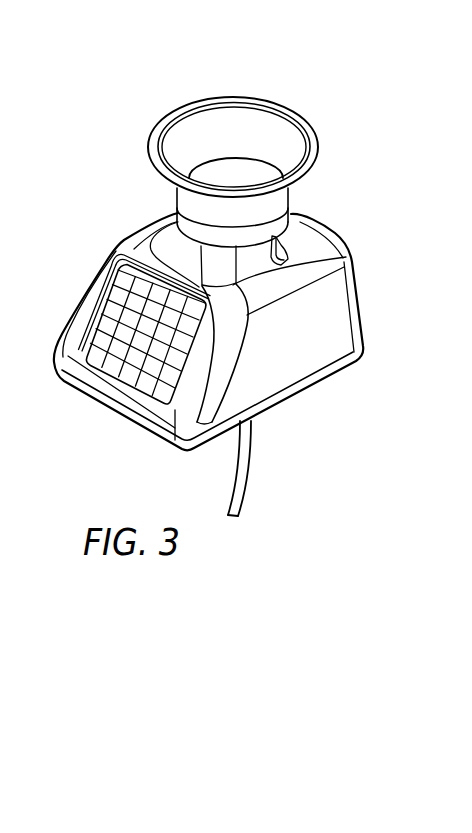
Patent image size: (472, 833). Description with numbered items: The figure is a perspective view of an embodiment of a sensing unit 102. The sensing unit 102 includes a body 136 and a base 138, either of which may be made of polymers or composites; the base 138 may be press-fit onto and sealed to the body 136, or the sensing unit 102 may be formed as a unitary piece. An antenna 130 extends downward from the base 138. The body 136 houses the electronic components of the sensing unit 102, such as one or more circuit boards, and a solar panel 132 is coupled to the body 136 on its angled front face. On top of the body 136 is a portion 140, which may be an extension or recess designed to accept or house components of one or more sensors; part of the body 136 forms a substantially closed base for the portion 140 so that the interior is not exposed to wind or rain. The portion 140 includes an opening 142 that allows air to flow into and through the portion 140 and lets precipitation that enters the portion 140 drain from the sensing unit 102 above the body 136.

The sensing unit 102 is at (127, 62).
The antenna 130 is at (250, 473).
The solar panel 132 is at (119, 289).
The body 136 is at (306, 346).
The base 138 is at (332, 370).
The portion 140 is at (180, 195).
The opening 142 is at (287, 252).